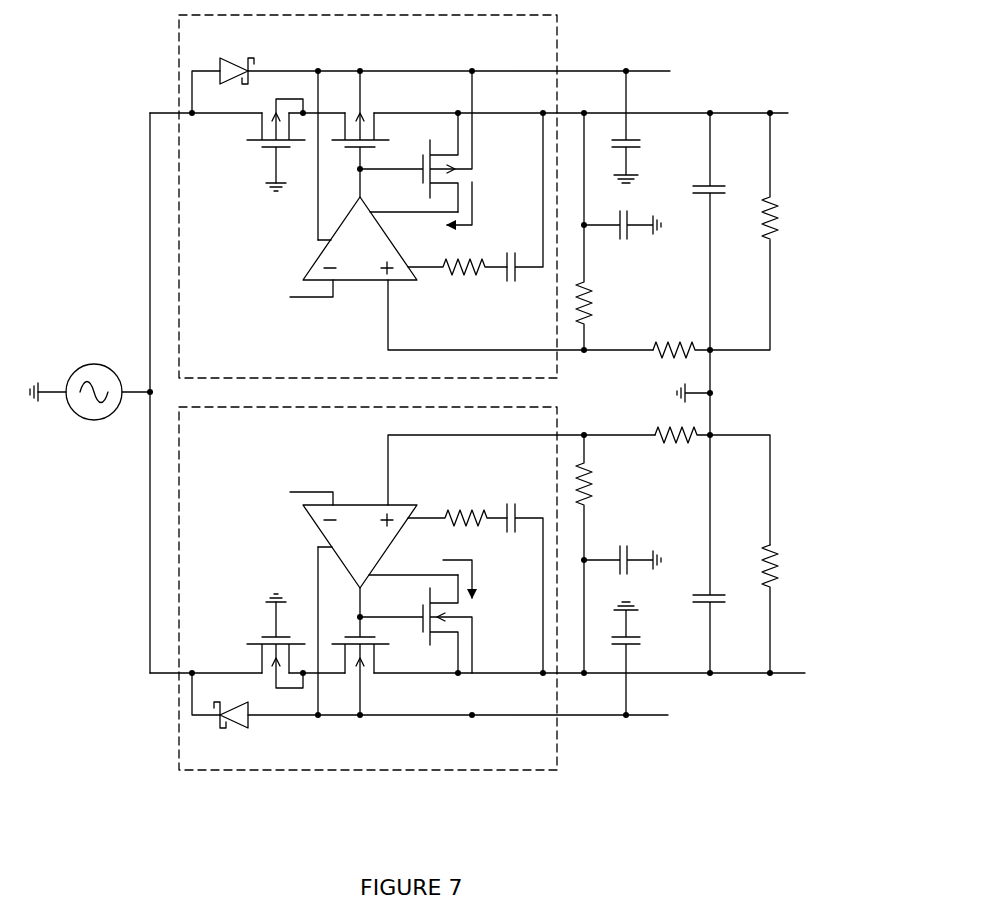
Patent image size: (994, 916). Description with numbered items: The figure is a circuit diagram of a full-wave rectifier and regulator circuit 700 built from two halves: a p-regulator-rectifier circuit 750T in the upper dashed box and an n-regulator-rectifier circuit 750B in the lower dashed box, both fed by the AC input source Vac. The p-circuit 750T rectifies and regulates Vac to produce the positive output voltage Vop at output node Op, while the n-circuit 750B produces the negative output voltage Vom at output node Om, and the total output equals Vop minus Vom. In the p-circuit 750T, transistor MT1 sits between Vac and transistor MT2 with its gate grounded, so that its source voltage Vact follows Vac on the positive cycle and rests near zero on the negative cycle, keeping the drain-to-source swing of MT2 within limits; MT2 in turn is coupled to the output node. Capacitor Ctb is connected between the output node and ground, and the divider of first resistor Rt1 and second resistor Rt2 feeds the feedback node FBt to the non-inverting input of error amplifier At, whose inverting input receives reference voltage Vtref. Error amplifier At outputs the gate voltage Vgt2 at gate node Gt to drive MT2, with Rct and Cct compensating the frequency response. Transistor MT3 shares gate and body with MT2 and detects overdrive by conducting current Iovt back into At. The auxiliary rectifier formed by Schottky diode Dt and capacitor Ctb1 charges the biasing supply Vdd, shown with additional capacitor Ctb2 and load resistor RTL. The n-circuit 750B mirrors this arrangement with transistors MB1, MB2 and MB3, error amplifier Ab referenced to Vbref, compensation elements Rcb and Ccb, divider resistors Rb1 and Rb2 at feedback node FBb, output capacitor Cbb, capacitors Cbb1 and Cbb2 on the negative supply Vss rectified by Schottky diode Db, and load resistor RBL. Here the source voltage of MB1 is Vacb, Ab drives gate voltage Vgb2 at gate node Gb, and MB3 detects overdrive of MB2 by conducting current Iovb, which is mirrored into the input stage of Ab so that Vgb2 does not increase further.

The amplifier circuit 700 is at (159, 775).
The p-regulator-rectifier circuit 750T is at (236, 369).
The n-regulator-rectifier circuit 750B is at (236, 437).
The input voltage Vac is at (90, 373).
The Schottky diode Dt is at (223, 67).
The bottom diode Db is at (220, 711).
The transistor MT1 is at (262, 145).
The transistor MT2 is at (370, 134).
The transistor MT3 is at (440, 141).
The bottom transistor 1 MB1 is at (263, 641).
The transistor MB2 is at (371, 651).
The transistor MB3 is at (438, 624).
The error amplifier At is at (360, 238).
The error amplifier Ab is at (360, 546).
The compensation resistor Rct is at (457, 281).
The compensation capacitor Cct is at (525, 208).
The bottom compensation resistor Rcb is at (457, 505).
The bottom compensation capacitor Ccb is at (521, 578).
The first resistor Rt1 is at (604, 233).
The second resistor Rt2 is at (711, 299).
The bottom feedback resistor 1 Rb1 is at (606, 552).
The bottom feedback resistor 2 Rb2 is at (712, 486).
The capacitor Ctb1 is at (642, 127).
The top capacitor 2 Ctb2 is at (622, 235).
The capacitor Ctb is at (713, 274).
The bottom capacitor 1 Cbb1 is at (642, 658).
The bottom capacitor 2 Cbb2 is at (622, 550).
The bottom output capacitor Cbb is at (723, 554).
The top load resistor RTL is at (790, 176).
The bottom load resistor RBL is at (791, 609).
The biasing voltage Vdd is at (475, 71).
The negative supply rail Vss is at (477, 715).
The positive output voltage Vop is at (776, 95).
The negative output voltage Vom is at (798, 700).
The positive output node Op is at (525, 95).
The negative output node Om is at (527, 692).
The source voltage of transistor MT1 Vact is at (334, 102).
The bottom control voltage Vacb is at (333, 685).
The gate voltage Vgt2 is at (354, 184).
The gate voltage of transistor MB2 Vgb2 is at (352, 603).
The reference voltage Vtref is at (291, 292).
The bottom reference voltage Vbref is at (288, 494).
The top gate node Gt is at (414, 221).
The bottom gate node Gb is at (413, 550).
The current Iovt is at (478, 203).
The current Iovb is at (478, 579).
The top feedback node FBt is at (520, 315).
The bottom feedback node FBb is at (521, 470).